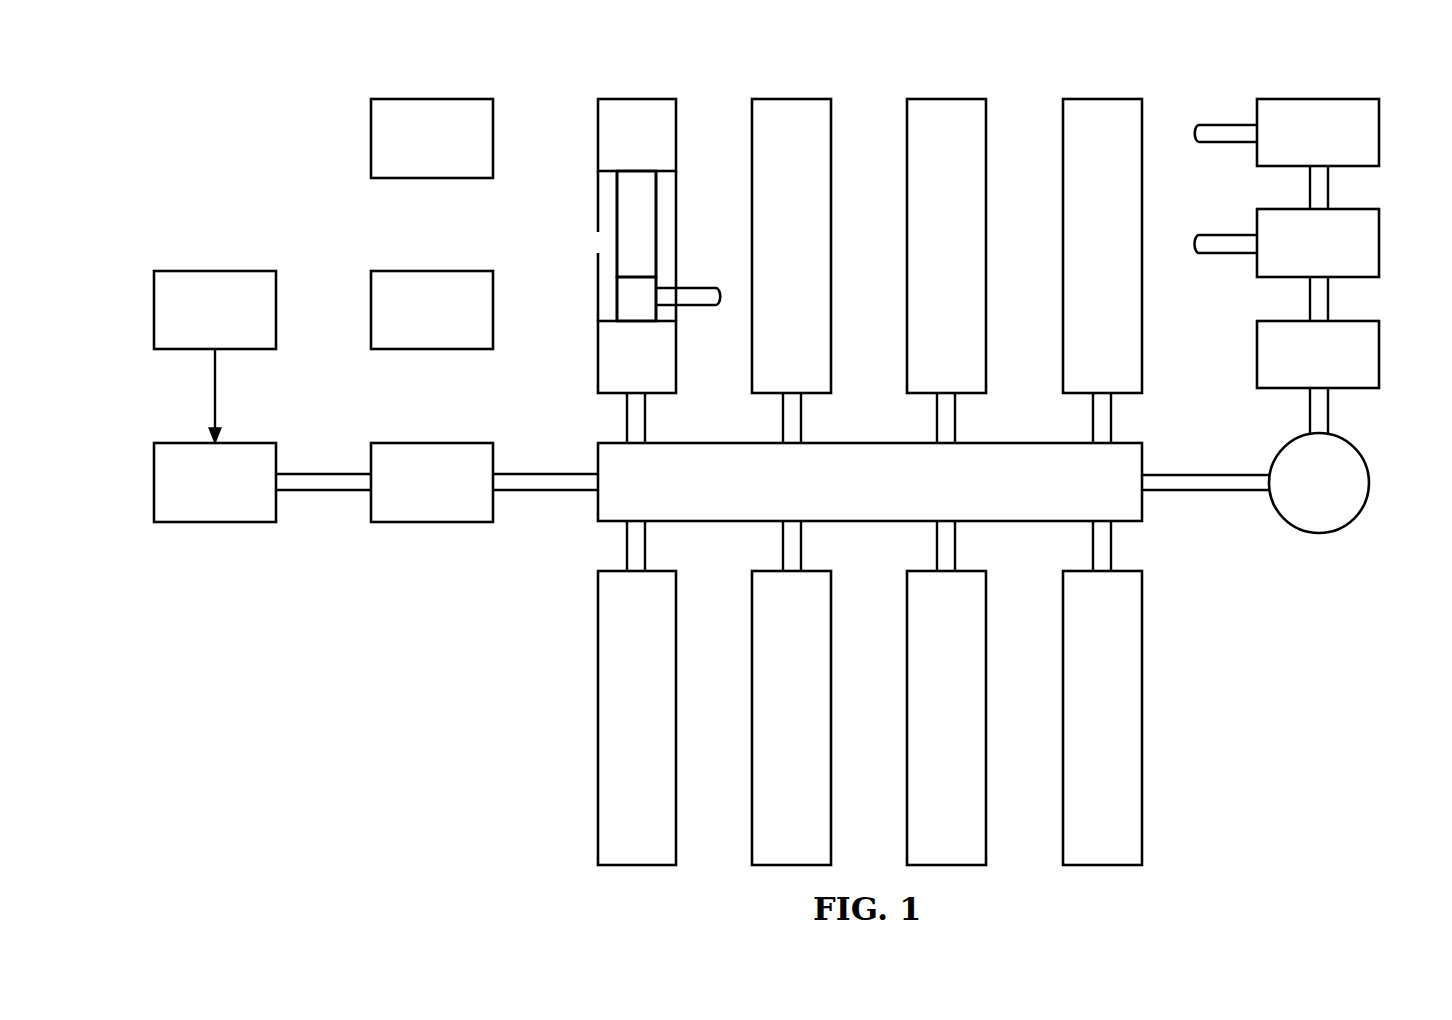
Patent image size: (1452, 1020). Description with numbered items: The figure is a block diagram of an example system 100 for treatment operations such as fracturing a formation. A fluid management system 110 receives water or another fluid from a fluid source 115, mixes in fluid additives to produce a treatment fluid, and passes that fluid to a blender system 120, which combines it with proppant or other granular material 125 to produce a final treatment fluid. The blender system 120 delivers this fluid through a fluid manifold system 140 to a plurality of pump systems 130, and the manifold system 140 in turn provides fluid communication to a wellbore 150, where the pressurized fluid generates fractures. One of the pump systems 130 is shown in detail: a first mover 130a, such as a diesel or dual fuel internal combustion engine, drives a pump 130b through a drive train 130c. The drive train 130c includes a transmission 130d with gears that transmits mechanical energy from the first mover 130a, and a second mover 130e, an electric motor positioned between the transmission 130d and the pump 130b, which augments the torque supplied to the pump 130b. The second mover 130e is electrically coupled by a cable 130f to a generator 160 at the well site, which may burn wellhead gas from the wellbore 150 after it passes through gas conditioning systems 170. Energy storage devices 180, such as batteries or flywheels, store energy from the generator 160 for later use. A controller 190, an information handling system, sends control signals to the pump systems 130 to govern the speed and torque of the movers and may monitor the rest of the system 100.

The system 100 is at (247, 78).
The fluid management system 110 is at (153, 481).
The fluid source 115 is at (153, 308).
The blender system 120 is at (420, 523).
The granular material 125 is at (370, 308).
The pump system 130 is at (621, 88).
The first mover 130a is at (605, 133).
The pump 130b is at (605, 360).
The drive train 130c is at (608, 243).
The transmission 130d is at (628, 202).
The second mover 130e is at (628, 296).
The cable 130f is at (700, 287).
The fluid manifold system 140 is at (1143, 511).
The wellbore 150 is at (1369, 485).
The generator 160 is at (1380, 242).
The gas conditioning system 170 is at (1380, 352).
The energy storage device 180 is at (1380, 132).
The controller 190 is at (370, 136).